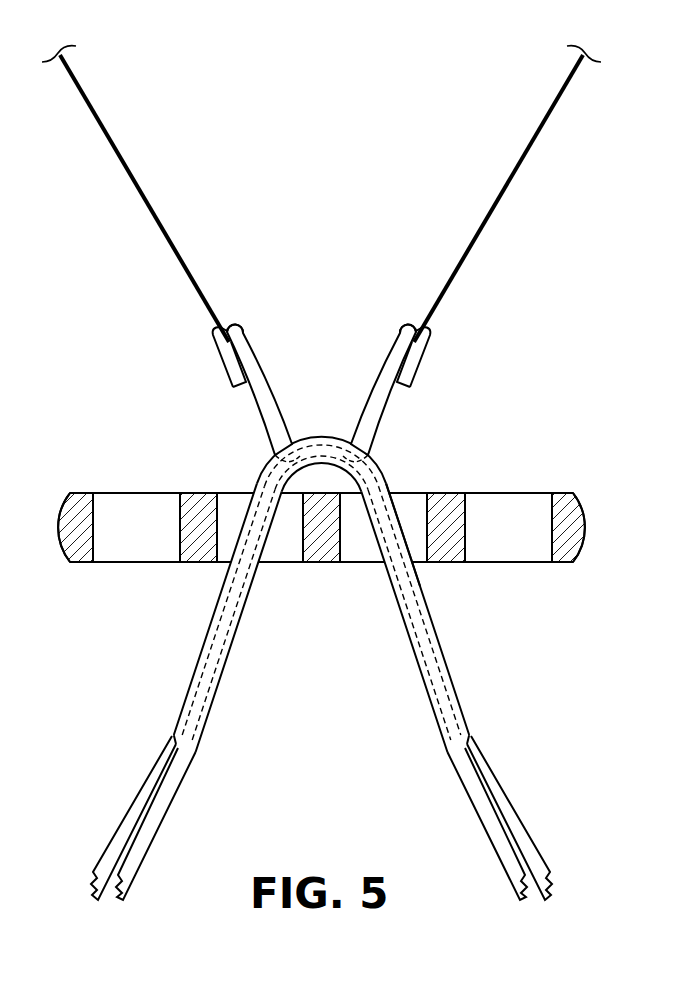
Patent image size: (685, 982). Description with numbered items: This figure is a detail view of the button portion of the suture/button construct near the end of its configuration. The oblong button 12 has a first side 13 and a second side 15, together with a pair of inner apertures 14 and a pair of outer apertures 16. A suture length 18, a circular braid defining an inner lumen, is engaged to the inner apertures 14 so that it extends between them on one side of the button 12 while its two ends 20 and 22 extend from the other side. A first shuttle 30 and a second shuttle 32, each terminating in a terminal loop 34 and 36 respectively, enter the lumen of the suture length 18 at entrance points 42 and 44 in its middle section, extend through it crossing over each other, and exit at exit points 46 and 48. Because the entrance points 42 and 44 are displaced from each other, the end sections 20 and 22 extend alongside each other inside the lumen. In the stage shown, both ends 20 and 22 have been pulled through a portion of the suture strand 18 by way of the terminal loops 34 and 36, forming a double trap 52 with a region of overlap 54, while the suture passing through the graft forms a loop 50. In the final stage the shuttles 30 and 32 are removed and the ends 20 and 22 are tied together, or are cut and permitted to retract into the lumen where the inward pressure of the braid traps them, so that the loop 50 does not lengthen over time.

The oblong button 12 is at (331, 516).
The first side 13 is at (88, 493).
The inner apertures 14 is at (321, 638).
The second side 15 is at (560, 563).
The outer apertures 16 is at (138, 507).
The suture length 18 is at (299, 437).
The end 20 is at (429, 382).
The end 22 is at (219, 382).
The first shuttle 30 is at (122, 162).
The second shuttle 32 is at (521, 162).
The terminal loop 34 is at (211, 324).
The terminal loop 36 is at (433, 324).
The entrance point 42 is at (273, 448).
The entrance point 44 is at (370, 448).
The exit point 46 is at (486, 808).
The exit point 48 is at (169, 736).
The loop 50 is at (487, 826).
The double trap 52 is at (381, 469).
The region of overlap 54 is at (345, 440).